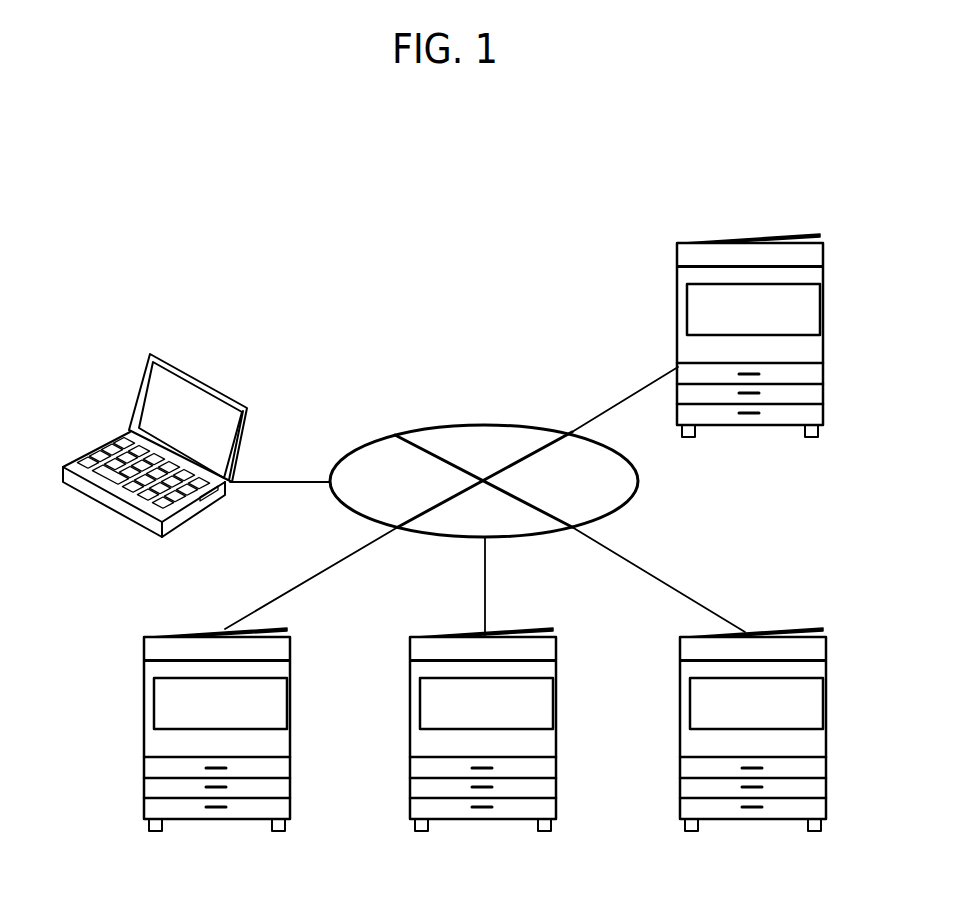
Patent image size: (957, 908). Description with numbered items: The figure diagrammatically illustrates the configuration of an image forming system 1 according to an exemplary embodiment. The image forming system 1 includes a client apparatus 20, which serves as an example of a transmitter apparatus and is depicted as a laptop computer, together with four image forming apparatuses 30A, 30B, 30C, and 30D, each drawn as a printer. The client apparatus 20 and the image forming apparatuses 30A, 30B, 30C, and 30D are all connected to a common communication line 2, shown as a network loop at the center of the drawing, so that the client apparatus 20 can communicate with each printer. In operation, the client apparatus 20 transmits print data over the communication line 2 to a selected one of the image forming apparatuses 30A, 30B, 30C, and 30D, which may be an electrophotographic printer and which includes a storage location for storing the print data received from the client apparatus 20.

The image forming system 1 is at (373, 297).
The communication line 2 is at (456, 425).
The client apparatus 20 is at (213, 391).
The image forming apparatus 30A is at (175, 637).
The image forming apparatus 30B is at (438, 637).
The image forming apparatus 30C is at (788, 628).
The image forming apparatus 30D is at (678, 332).